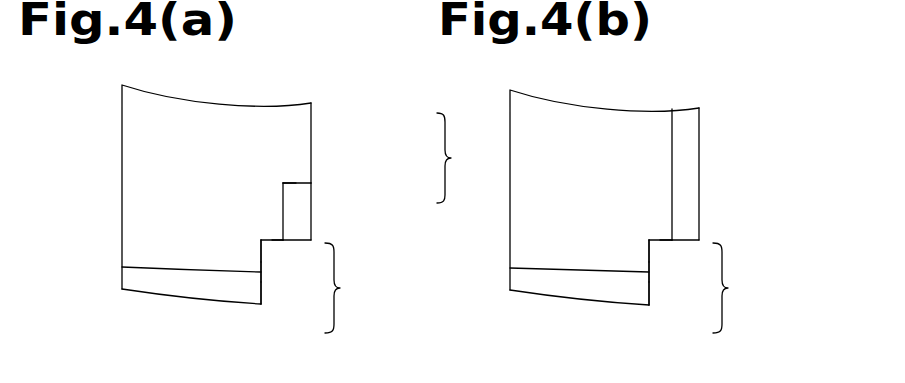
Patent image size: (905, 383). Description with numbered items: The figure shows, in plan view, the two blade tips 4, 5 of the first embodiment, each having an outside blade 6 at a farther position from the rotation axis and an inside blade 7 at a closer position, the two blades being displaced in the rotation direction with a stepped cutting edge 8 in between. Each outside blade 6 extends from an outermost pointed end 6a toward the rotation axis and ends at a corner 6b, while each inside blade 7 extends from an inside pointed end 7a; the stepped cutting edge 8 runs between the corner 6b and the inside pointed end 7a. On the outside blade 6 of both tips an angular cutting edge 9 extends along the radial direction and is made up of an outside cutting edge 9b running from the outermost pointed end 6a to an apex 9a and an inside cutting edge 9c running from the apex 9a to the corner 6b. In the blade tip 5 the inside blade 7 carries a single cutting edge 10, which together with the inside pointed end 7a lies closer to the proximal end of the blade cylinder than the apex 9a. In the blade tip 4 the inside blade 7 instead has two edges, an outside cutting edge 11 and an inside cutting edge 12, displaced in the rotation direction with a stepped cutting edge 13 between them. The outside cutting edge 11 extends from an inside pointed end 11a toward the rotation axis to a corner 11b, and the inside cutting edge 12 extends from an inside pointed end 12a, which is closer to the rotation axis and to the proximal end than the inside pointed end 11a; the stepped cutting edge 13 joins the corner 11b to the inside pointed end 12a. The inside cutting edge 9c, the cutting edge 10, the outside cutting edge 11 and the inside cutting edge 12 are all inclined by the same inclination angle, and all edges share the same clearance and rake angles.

In FIG. 4A, the blade tip 4 is at (176, 118).
In FIG. 4B, the blade tip 5 is at (565, 118).
In FIG. 4A, the outside blade 6 is at (261, 279).
In FIG. 4B, the outside blade 6 is at (649, 279).
In FIG. 4A, the outermost pointed end 6a is at (262, 305).
In FIG. 4B, the outermost pointed end 6a is at (650, 305).
In FIG. 4A, the corner 6b is at (260, 240).
In FIG. 4B, the corner 6b is at (648, 240).
In FIG. 4A, the inside blade 7 is at (297, 230).
In FIG. 4B, the inside blade 7 is at (672, 160).
In FIG. 4B, the inside pointed end 7a is at (672, 238).
In FIG. 4A, the stepped cutting edge 8 is at (271, 238).
In FIG. 4B, the stepped cutting edge 8 is at (659, 238).
In FIG. 4A, the cutting edge 9 is at (330, 286).
In FIG. 4B, the cutting edge 9 is at (718, 286).
In FIG. 4A, the apex 9a is at (262, 271).
In FIG. 4B, the apex 9a is at (650, 271).
In FIG. 4A, the outside cutting edge 9b is at (262, 290).
In FIG. 4B, the outside cutting edge 9b is at (650, 290).
In FIG. 4A, the inside cutting edge 9c is at (262, 253).
In FIG. 4B, the inside cutting edge 9c is at (650, 253).
In FIG. 4B, the cutting edge 10 is at (729, 174).
In FIG. 4A, the outside cutting edge 11 is at (283, 210).
In FIG. 4A, the inside pointed end 11a is at (359, 235).
In FIG. 4A, the corner 11b is at (283, 182).
In FIG. 4A, the inside cutting edge 12 is at (311, 134).
In FIG. 4A, the inside pointed end 12a is at (311, 183).
In FIG. 4A, the stepped cutting edge 13 is at (292, 183).